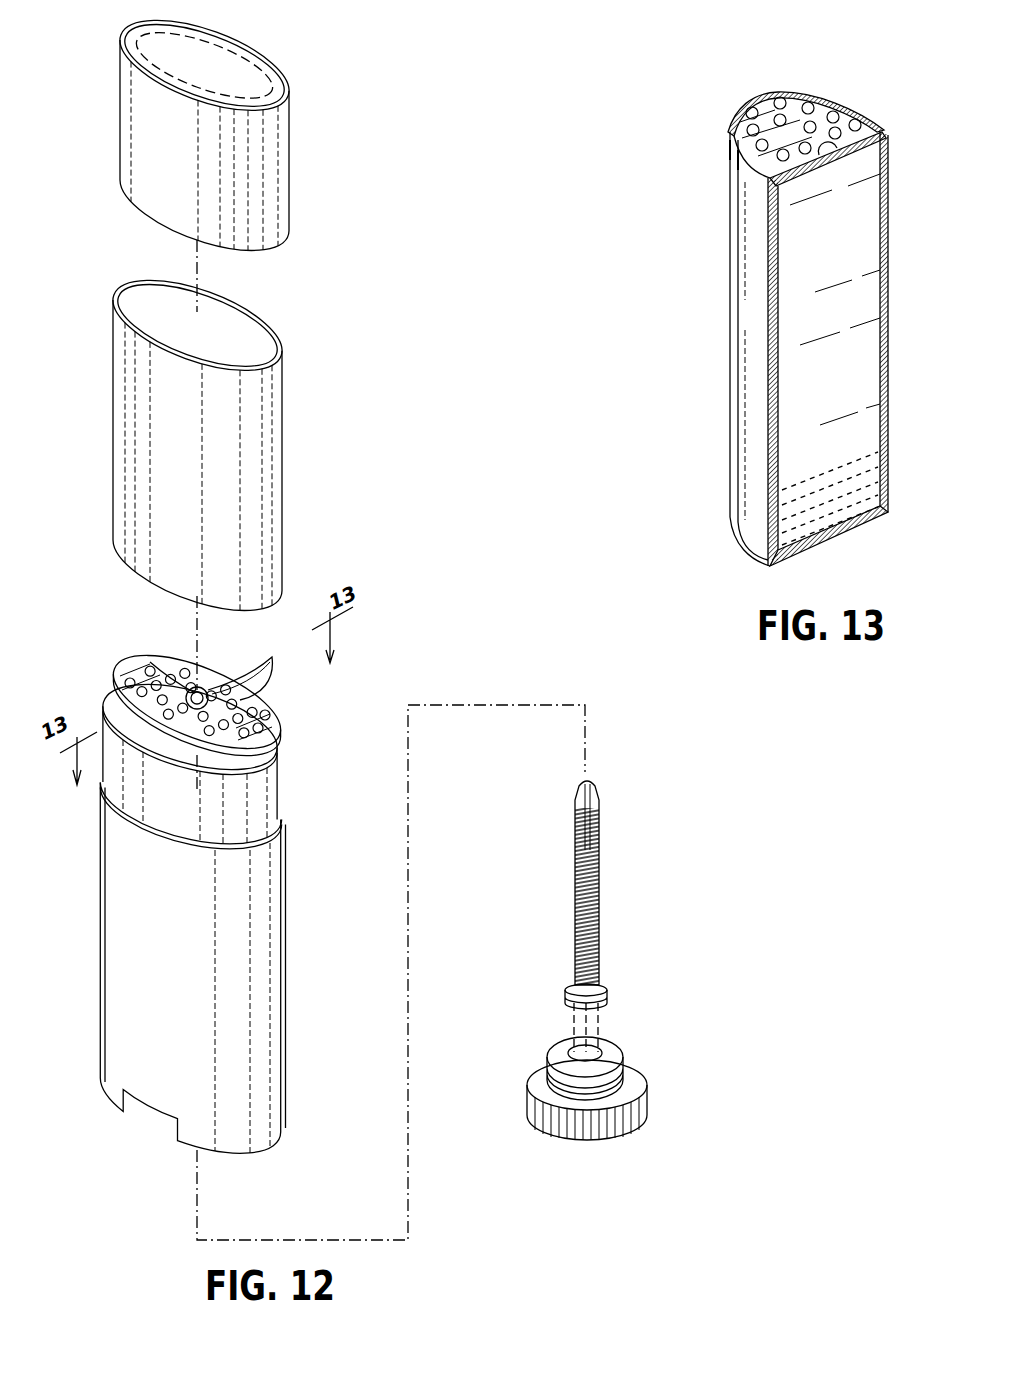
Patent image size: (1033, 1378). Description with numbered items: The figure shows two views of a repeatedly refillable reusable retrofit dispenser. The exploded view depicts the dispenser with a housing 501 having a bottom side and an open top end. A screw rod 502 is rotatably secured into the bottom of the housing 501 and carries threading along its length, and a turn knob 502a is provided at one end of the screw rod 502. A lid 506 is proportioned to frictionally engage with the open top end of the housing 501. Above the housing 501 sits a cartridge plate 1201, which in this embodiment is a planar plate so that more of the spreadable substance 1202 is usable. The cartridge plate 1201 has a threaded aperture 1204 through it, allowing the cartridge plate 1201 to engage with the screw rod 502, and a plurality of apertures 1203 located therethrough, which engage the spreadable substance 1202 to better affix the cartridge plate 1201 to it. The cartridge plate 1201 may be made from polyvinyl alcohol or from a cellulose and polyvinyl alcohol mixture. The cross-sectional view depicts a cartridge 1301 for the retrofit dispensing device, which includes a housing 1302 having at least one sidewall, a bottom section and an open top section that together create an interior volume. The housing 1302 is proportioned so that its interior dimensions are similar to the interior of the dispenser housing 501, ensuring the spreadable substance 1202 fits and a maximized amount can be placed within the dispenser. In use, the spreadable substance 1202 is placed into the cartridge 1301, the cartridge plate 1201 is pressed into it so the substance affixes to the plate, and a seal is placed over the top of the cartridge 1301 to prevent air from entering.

In FIG. 12, the lid 506 is at (291, 142).
In FIG. 12, the spreadable substance 1202 is at (262, 488).
In FIG. 13, the spreadable substance 1202 is at (786, 423).
In FIG. 12, the cartridge plate 1201 is at (278, 716).
In FIG. 13, the cartridge plate 1201 is at (825, 117).
In FIG. 12, the apertures 1203 is at (243, 677).
In FIG. 12, the threaded aperture 1204 is at (150, 662).
In FIG. 12, the housing 501 is at (112, 812).
In FIG. 12, the screw rod 502 is at (598, 922).
In FIG. 12, the turn knob 502a is at (648, 1095).
In FIG. 13, the cartridge 1301 is at (649, 234).
In FIG. 13, the housing 1302 is at (740, 308).